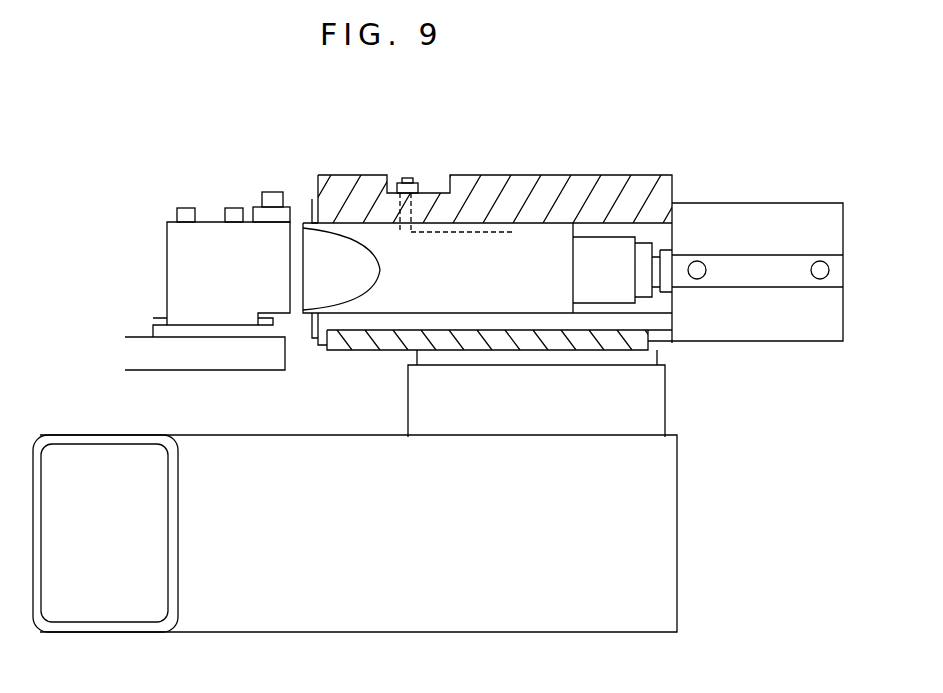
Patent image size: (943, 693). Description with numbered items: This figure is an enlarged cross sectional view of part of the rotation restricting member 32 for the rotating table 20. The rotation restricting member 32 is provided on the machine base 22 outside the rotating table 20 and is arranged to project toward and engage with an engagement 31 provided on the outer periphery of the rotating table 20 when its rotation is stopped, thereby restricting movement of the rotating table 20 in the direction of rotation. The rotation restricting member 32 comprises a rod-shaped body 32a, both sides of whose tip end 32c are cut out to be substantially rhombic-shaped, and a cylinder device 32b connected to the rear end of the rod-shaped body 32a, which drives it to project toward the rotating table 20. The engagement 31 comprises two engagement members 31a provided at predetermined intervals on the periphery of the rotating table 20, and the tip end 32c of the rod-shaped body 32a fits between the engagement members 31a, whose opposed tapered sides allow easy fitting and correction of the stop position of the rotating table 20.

The rotating table 20 is at (225, 358).
The machine base 22 is at (122, 613).
The engagement 31 is at (186, 215).
The engagement member 31a is at (236, 285).
The rotation restricting member 32 is at (558, 212).
The rod-shaped body 32a is at (452, 260).
The cylinder device 32b is at (745, 223).
The tip end 32c is at (323, 255).